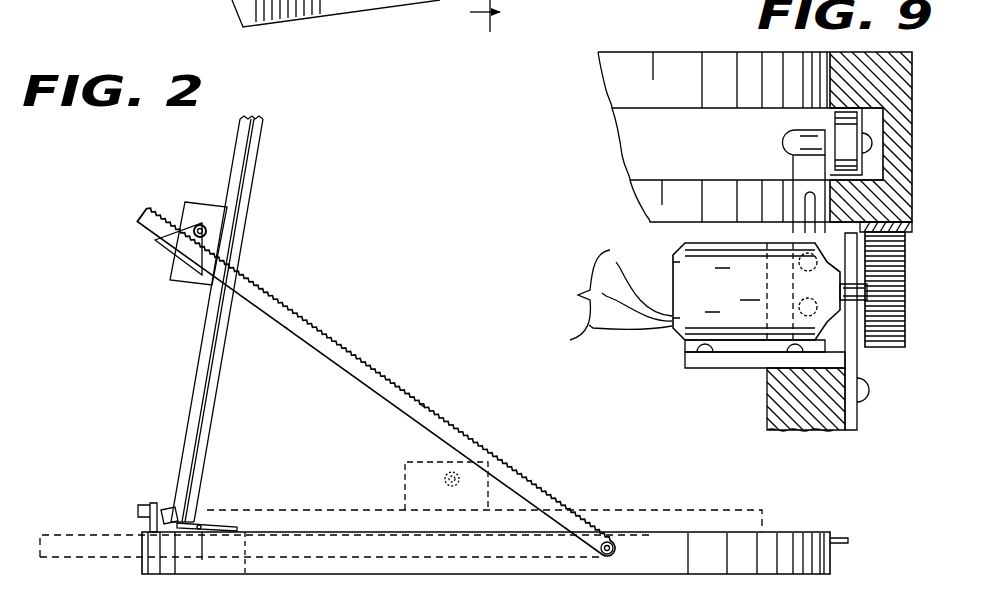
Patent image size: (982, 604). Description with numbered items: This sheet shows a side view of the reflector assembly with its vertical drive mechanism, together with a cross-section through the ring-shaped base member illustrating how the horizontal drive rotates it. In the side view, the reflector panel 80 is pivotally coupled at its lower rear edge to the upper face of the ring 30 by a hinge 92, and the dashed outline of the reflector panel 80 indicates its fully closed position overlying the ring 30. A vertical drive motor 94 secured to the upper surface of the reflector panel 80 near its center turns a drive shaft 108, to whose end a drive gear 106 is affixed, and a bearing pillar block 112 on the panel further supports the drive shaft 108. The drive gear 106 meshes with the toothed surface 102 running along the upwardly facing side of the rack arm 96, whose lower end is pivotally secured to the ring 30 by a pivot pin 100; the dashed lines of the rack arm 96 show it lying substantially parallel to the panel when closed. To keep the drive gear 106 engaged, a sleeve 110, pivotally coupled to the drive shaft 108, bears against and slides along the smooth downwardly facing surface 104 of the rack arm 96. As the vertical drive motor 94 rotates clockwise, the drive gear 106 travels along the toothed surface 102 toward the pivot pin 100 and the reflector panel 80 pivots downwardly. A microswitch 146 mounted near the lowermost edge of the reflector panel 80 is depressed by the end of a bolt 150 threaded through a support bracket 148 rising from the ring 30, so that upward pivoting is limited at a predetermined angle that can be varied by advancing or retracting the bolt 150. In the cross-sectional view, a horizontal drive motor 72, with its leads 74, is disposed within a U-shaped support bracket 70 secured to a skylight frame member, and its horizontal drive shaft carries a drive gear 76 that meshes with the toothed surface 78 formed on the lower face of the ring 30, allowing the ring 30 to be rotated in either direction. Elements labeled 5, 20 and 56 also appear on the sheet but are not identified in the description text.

In FIG. 9, the workpiece frame section 5 is at (631, 39).
In FIG. 2, the frame member 20 is at (323, 7).
In FIG. 9, the ring 30 is at (905, 72).
In FIG. 2, the section line indicator 56 is at (516, 8).
In FIG. 9, the U-shaped support bracket 70 is at (865, 355).
In FIG. 9, the horizontal drive motor 72 is at (696, 278).
In FIG. 9, the leads 74 is at (612, 295).
In FIG. 9, the drive gear 76 is at (902, 331).
In FIG. 9, the toothed surface 78 is at (915, 235).
In FIG. 2, the reflector panel 80 is at (254, 248).
In FIG. 2, the hinge 92 is at (216, 515).
In FIG. 2, the vertical drive motor 94 is at (190, 208).
In FIG. 2, the rack arm 96 is at (388, 392).
In FIG. 2, the pivot pin 100 is at (607, 541).
In FIG. 2, the toothed surface 102 is at (357, 346).
In FIG. 2, the smooth downwardly facing surface 104 is at (285, 339).
In FIG. 2, the drive gear 106 is at (178, 218).
In FIG. 2, the drive shaft 108 is at (206, 224).
In FIG. 2, the sleeve 110 is at (170, 245).
In FIG. 2, the bearing pillar block 112 is at (218, 234).
In FIG. 2, the microswitch 146 is at (170, 501).
In FIG. 2, the support bracket 148 is at (152, 527).
In FIG. 2, the bolt 150 is at (135, 488).